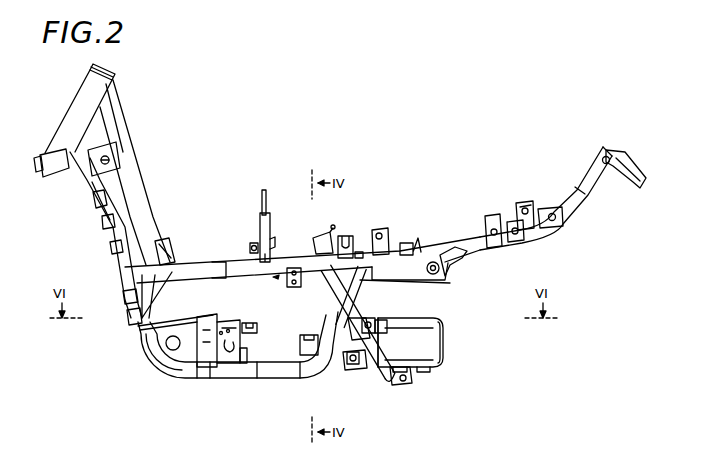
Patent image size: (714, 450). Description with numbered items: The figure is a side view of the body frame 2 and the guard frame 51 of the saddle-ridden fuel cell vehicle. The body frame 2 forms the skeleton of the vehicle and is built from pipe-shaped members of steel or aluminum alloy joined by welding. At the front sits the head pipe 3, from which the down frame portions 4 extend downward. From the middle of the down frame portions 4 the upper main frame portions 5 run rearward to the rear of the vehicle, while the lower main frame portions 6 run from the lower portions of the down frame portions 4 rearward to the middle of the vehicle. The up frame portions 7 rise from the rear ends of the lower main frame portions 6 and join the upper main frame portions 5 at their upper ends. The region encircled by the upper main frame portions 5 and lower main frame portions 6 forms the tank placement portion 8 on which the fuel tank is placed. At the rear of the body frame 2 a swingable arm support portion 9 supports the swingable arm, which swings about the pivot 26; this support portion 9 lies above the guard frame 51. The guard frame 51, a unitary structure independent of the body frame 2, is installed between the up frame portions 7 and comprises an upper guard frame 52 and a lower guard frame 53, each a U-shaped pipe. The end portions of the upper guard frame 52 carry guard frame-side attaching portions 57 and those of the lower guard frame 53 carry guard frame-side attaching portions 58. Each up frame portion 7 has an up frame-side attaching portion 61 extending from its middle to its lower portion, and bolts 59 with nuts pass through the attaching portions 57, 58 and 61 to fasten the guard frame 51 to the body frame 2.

The body frame 2 is at (142, 158).
The head pipe 3 is at (90, 93).
The down frame portion 4 is at (147, 194).
The upper main frame portion 5 is at (200, 270).
The lower main frame portion 6 is at (264, 370).
The up frame portion 7 is at (337, 304).
The tank placement portion 8 is at (243, 298).
The swingable arm support portion 9 is at (465, 262).
The pivot 26 is at (434, 258).
The guard frame 51 is at (447, 348).
The upper guard frame 52 is at (420, 320).
The lower guard frame 53 is at (375, 382).
The guard frame-side attaching portion 57 is at (378, 321).
The guard frame-side attaching portion 58 is at (356, 370).
The bolt 59 is at (368, 320).
The up frame-side attaching portion 61 is at (357, 340).